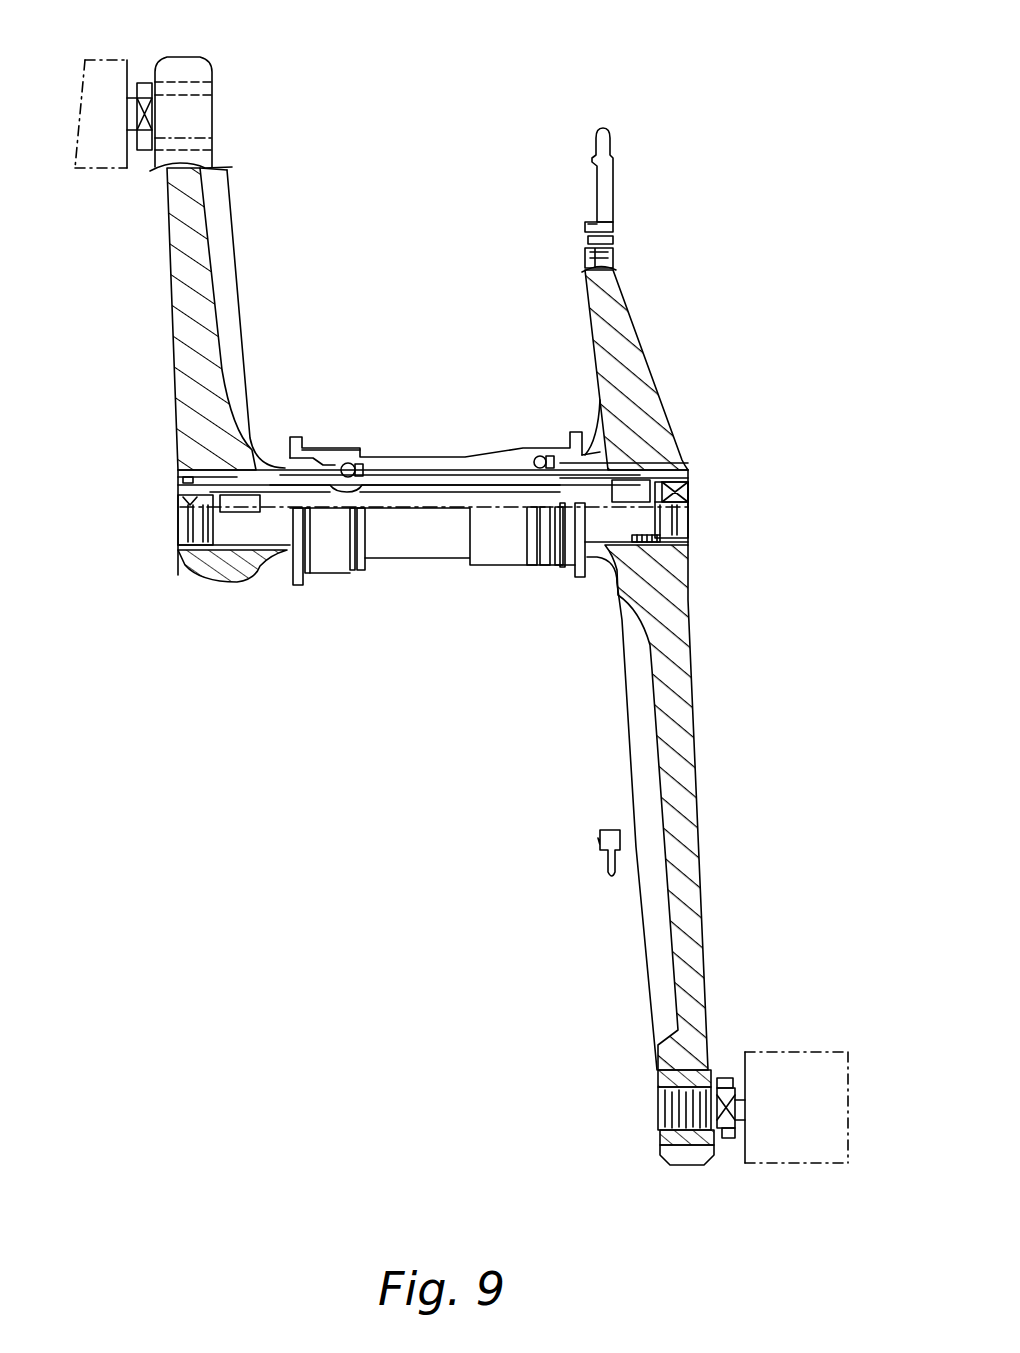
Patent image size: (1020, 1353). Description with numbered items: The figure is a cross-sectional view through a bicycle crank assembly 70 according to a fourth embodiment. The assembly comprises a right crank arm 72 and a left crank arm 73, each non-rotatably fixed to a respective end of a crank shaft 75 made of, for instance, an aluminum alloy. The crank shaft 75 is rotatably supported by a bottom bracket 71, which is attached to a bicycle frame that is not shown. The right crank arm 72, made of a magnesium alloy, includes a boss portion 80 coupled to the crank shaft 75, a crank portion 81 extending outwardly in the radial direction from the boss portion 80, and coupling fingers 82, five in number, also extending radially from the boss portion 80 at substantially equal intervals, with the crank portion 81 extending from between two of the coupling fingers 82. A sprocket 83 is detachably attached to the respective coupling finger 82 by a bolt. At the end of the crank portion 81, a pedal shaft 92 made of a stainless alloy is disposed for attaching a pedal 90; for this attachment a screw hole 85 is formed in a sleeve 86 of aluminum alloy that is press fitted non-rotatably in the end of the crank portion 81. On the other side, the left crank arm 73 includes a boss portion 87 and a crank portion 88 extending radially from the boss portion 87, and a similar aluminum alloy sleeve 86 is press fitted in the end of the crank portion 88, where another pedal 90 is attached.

The crank assembly 70 is at (404, 237).
The bottom bracket 71 is at (453, 450).
The right crank arm 72 is at (722, 408).
The left crank arm 73 is at (250, 328).
The crank shaft 75 is at (425, 466).
The boss portion 80 is at (675, 442).
The crank portion 81 is at (692, 745).
The coupling fingers 82 is at (630, 302).
The sprocket 83 is at (615, 200).
The screw hole 85 is at (718, 1078).
The sleeve 86 is at (188, 78).
The boss portion 87 is at (218, 578).
The crank portion 88 is at (181, 296).
The pedal 90 is at (103, 173).
The pedal shaft 92 is at (728, 1140).